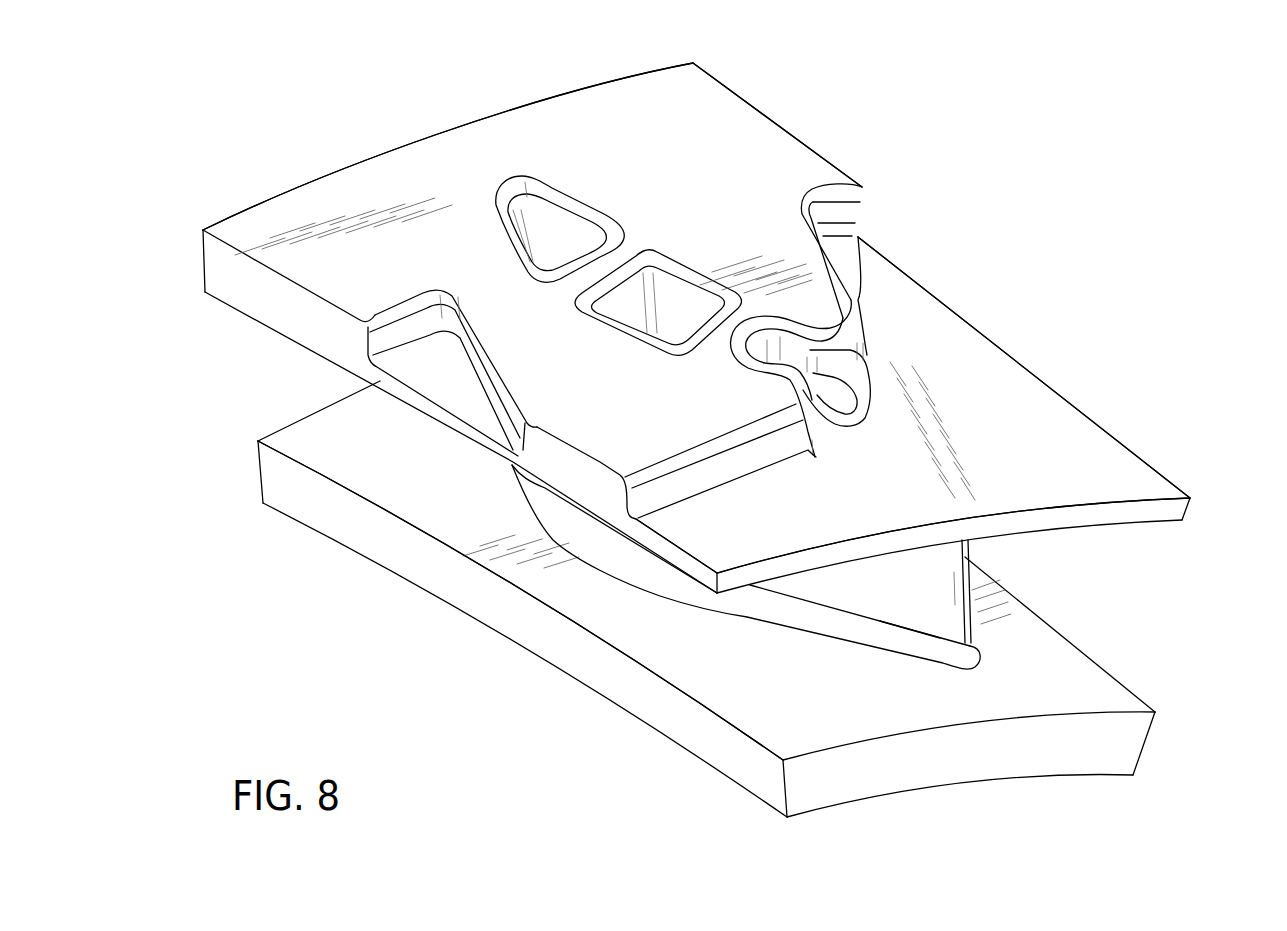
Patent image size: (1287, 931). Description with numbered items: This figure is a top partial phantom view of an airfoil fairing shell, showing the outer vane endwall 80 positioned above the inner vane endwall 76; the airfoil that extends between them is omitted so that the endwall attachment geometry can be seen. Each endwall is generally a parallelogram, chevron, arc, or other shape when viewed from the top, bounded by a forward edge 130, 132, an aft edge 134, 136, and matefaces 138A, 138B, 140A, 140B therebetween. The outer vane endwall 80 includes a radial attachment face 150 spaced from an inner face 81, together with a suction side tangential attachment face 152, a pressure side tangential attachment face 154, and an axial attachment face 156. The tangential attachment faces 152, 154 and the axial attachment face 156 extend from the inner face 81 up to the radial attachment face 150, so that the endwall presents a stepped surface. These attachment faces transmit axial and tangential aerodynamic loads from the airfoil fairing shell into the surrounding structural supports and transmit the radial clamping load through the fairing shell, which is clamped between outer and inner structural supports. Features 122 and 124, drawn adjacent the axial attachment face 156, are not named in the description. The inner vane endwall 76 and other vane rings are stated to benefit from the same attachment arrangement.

The inner vane endwall 76 is at (686, 609).
The outer vane endwall 80 is at (727, 313).
The inner face 81 is at (880, 482).
The tab 122 is at (962, 587).
The strip top surface 124 is at (918, 592).
The forward edge 130 is at (473, 117).
The forward edge 132 is at (258, 477).
The aft edge 134 is at (1153, 512).
The aft edge 136 is at (1053, 745).
The mateface 138A is at (480, 433).
The mateface 138B is at (1013, 357).
The mateface 140A is at (443, 580).
The mateface 140B is at (1082, 648).
The radial attachment face 150 is at (708, 181).
The suction side tangential attachment face 152 is at (497, 378).
The pressure side tangential attachment face 154 is at (855, 268).
The axial attachment face 156 is at (796, 589).